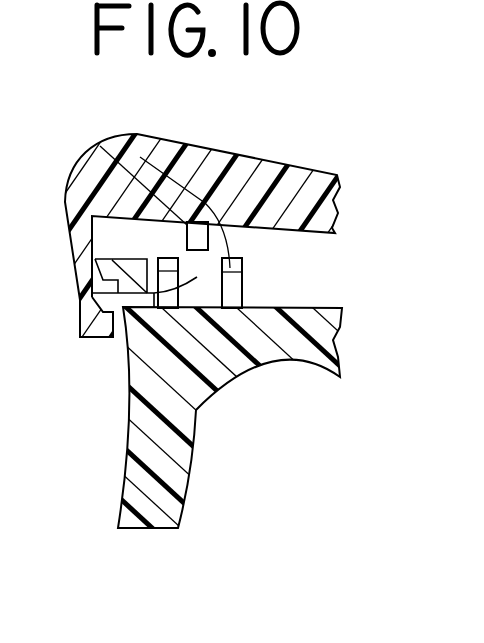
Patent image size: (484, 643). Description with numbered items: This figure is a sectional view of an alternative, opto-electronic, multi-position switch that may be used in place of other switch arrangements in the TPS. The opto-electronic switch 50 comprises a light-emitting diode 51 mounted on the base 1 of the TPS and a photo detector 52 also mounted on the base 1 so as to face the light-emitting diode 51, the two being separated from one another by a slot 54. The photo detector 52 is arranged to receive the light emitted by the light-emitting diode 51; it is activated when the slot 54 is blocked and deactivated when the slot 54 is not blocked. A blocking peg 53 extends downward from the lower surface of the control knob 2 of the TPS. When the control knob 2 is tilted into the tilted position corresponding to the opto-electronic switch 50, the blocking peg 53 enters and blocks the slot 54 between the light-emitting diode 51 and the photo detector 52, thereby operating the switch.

The base 1 is at (148, 488).
The control knob 2 is at (280, 197).
The opto-electronic switch 50 is at (203, 303).
The light-emitting diode 51 is at (165, 270).
The photo detector 52 is at (200, 240).
The blocking peg 53 is at (100, 146).
The slot 54 is at (80, 290).